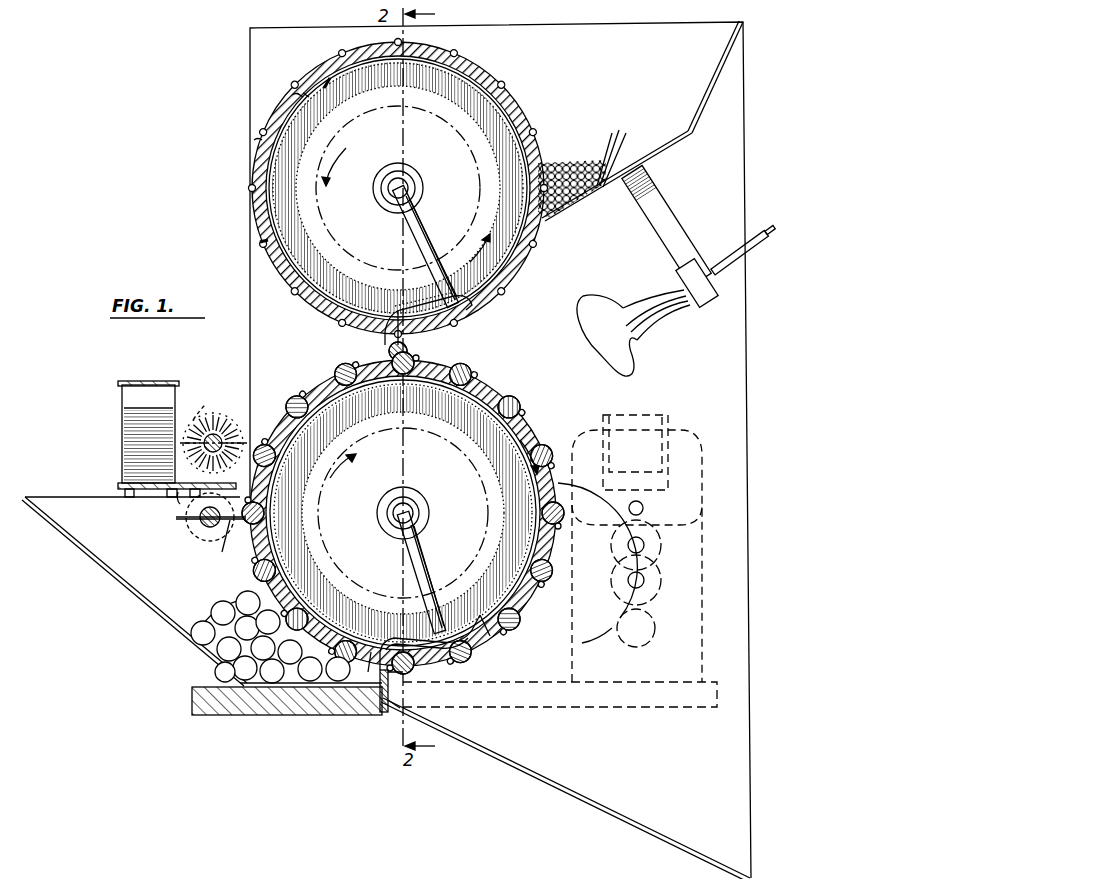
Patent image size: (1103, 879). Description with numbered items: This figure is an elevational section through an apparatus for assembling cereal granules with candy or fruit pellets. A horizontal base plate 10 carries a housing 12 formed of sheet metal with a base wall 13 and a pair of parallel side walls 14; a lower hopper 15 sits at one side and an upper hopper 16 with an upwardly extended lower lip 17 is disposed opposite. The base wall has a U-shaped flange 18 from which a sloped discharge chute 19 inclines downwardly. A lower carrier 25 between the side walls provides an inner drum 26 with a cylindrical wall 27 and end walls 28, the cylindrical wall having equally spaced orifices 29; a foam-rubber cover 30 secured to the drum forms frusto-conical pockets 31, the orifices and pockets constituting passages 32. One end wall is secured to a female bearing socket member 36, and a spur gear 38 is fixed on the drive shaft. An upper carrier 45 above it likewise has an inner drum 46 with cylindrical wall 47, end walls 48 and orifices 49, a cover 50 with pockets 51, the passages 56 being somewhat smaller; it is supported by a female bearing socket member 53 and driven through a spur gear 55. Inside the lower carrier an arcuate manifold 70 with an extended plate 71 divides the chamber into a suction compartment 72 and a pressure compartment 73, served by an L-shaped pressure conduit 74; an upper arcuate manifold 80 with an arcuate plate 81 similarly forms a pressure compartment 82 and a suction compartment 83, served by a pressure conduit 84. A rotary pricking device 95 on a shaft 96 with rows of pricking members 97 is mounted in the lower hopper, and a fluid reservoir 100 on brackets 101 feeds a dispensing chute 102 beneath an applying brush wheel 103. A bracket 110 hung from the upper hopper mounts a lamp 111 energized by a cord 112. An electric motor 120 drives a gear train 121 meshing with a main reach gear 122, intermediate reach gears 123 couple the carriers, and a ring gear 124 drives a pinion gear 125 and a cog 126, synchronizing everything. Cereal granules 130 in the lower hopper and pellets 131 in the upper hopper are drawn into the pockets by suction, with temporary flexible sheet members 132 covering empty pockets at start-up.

The base plate 10 is at (212, 716).
The housing 12 is at (748, 84).
The base wall 13 is at (508, 762).
The side walls 14 is at (582, 299).
The lower hopper 15 is at (132, 608).
The upper hopper 16 is at (692, 135).
The lower lip 17 is at (550, 222).
The U-shaped flange 18 is at (405, 692).
The discharge chute 19 is at (556, 786).
The lower carrier 25 is at (303, 378).
The inner drum 26 is at (538, 538).
The cylindrical wall 27 is at (520, 480).
The end walls 28 is at (412, 528).
The orifices 29 is at (472, 416).
The cover 30 is at (470, 382).
The pockets 31 is at (340, 372).
The passages 32 is at (550, 446).
The female bearing socket member 36 is at (385, 498).
The spur gear 38 is at (312, 528).
The upper carrier 45 is at (533, 120).
The inner drum 46 is at (507, 130).
The cylindrical wall 47 is at (480, 100).
The end walls 48 is at (392, 231).
The orifices 49 is at (258, 194).
The cover 50 is at (500, 80).
The pockets 51 is at (455, 52).
The female bearing socket member 53 is at (404, 165).
The spur gear 55 is at (392, 128).
The passages 56 is at (528, 118).
The arcuate manifold 70 is at (396, 636).
The extended plate 71 is at (372, 650).
The suction compartment 72 is at (490, 638).
The pressure compartment 73 is at (474, 628).
The pressure conduit 74 is at (390, 536).
The arcuate manifold 80 is at (448, 292).
The arcuate plate 81 is at (480, 250).
The pressure compartment 82 is at (398, 308).
The suction compartment 83 is at (290, 162).
The pressure conduit 84 is at (392, 206).
The rotary pricking device 95 is at (206, 527).
The shaft 96 is at (224, 552).
The pricking members 97 is at (190, 535).
The fluid reservoir 100 is at (122, 420).
The brackets 101 is at (118, 486).
The dispensing chute 102 is at (178, 512).
The applying brush wheel 103 is at (206, 412).
The bracket 110 is at (672, 212).
The lamp 111 is at (650, 330).
The cord 112 is at (752, 250).
The electric motor 120 is at (668, 412).
The gear train 121 is at (662, 563).
The main reach gear 122 is at (592, 672).
The intermediate reach gears 123 is at (440, 334).
The ring gear 124 is at (240, 594).
The pinion gear 125 is at (190, 548).
The cog 126 is at (194, 418).
The cereal granules 130 is at (205, 627).
The pellets 131 is at (555, 615).
The flexible sheet members 132 is at (306, 92).